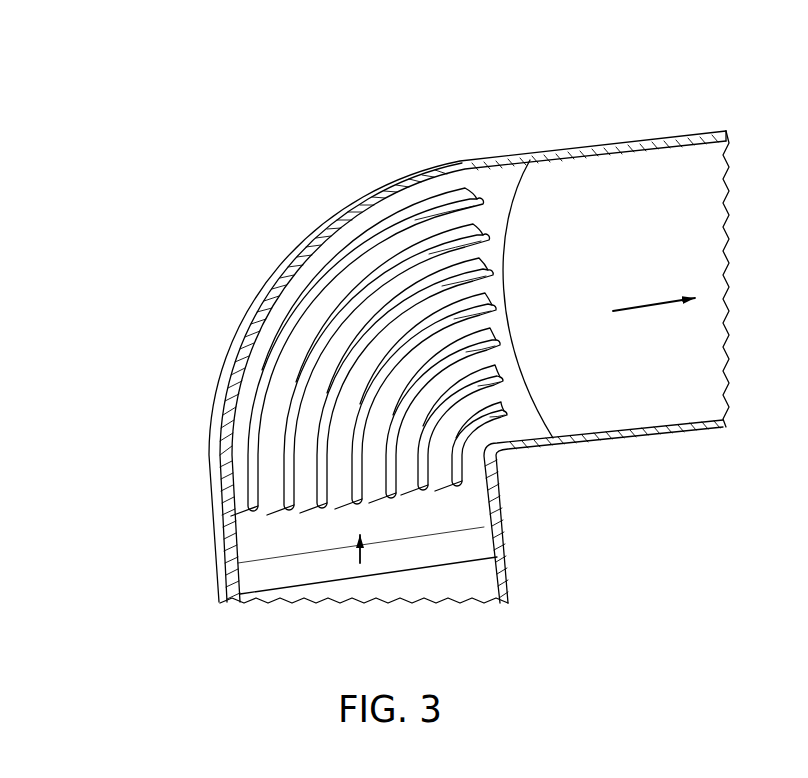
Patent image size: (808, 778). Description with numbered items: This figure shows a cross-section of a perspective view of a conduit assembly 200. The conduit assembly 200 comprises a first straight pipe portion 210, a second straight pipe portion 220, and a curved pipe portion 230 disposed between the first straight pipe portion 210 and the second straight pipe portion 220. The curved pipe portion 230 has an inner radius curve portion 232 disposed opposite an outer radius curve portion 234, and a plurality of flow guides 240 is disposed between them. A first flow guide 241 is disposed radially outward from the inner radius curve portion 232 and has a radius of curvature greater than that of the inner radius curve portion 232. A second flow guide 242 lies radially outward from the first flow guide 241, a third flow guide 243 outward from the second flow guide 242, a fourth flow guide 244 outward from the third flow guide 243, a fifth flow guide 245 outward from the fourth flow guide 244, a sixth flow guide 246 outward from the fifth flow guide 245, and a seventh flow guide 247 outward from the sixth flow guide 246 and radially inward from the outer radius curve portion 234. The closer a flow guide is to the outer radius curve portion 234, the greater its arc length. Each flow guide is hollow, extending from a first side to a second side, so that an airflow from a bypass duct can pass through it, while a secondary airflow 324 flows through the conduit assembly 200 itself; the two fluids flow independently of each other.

The conduit assembly 200 is at (295, 82).
The first straight pipe portion 210 is at (450, 580).
The second straight pipe portion 220 is at (640, 140).
The curved pipe portion 230 is at (275, 288).
The inner radius curve portion 232 is at (512, 447).
The outer radius curve portion 234 is at (243, 343).
The plurality of flow guides 240 is at (389, 357).
The first flow guide 241 is at (505, 413).
The second flow guide 242 is at (501, 379).
The third flow guide 243 is at (497, 343).
The fourth flow guide 244 is at (493, 308).
The fifth flow guide 245 is at (489, 273).
The sixth flow guide 246 is at (484, 238).
The seventh flow guide 247 is at (478, 202).
The secondary airflow 324 is at (661, 300).